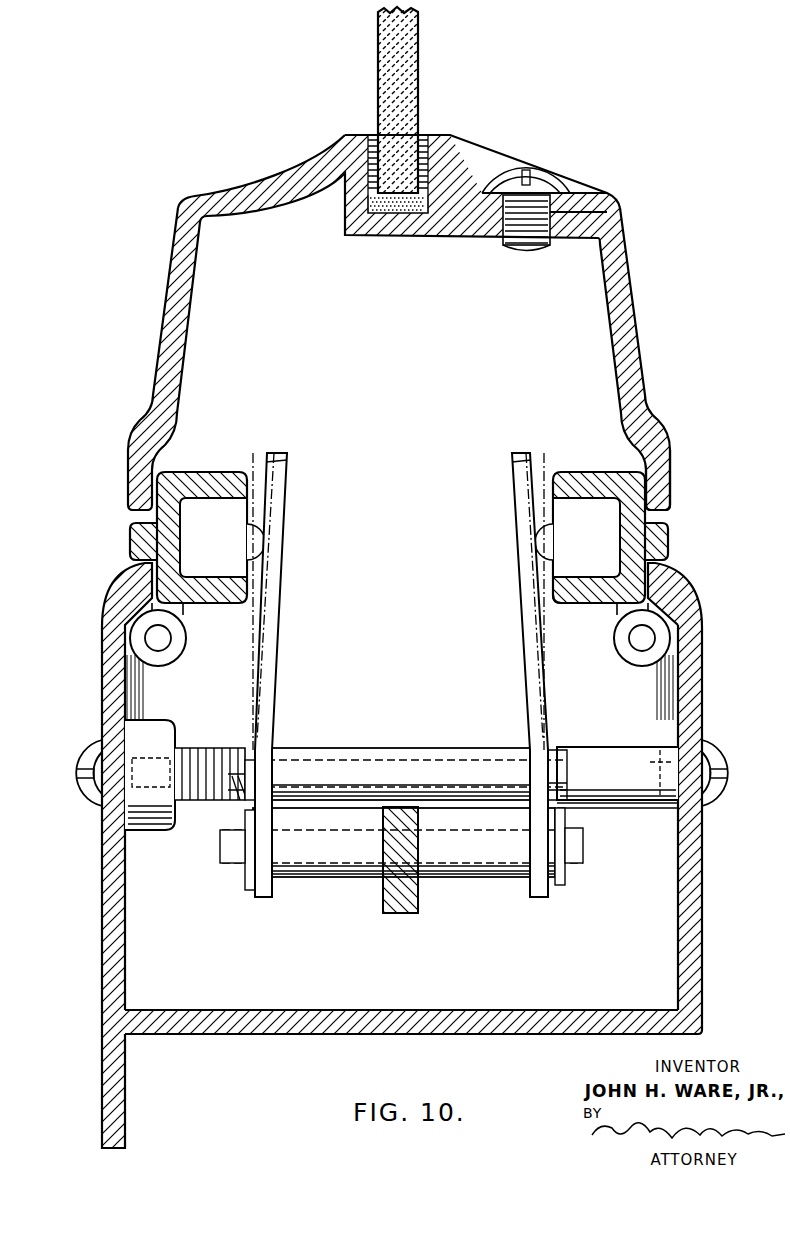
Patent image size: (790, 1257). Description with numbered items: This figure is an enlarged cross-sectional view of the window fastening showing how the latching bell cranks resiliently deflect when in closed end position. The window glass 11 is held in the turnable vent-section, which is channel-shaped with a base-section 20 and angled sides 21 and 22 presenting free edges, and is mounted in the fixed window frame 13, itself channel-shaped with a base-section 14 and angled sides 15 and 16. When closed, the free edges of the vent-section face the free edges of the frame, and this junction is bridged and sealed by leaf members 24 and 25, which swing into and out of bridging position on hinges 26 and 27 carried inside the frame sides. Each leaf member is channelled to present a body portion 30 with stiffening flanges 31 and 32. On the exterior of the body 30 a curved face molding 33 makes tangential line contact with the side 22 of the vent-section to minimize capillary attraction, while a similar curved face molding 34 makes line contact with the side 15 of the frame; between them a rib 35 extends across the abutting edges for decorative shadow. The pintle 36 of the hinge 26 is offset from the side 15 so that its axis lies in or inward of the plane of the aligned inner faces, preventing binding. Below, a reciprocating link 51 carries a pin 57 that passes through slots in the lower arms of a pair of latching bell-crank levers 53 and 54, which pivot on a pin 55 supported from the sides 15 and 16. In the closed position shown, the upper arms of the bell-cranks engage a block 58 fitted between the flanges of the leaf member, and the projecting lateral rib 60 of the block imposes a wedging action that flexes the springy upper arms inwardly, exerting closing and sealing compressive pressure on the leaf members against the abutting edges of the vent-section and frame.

The window glass 11 is at (414, 76).
The fixed window frame 13 is at (391, 958).
The base-section 14 is at (180, 1036).
The angled side 15 is at (703, 858).
The angled side 16 is at (103, 856).
The base-section 20 is at (283, 175).
The angled side 21 is at (162, 355).
The angled side 22 is at (637, 383).
The leaf member 24 is at (634, 537).
The leaf member 25 is at (150, 546).
The hinge 26 is at (624, 666).
The hinge 27 is at (166, 661).
The body portion 30 is at (586, 537).
The stiffening flange 31 is at (216, 471).
The stiffening flange 32 is at (591, 602).
The curved face molding 33 is at (650, 487).
The curved face molding 34 is at (667, 583).
The rib 35 is at (667, 541).
The pintle 36 is at (629, 646).
The link 51 is at (418, 904).
The latching bell-crank lever 53 is at (268, 703).
The latching bell-crank lever 54 is at (531, 704).
The pin 55 is at (379, 748).
The pin 57 is at (584, 858).
The block 58 is at (216, 521).
The lateral rib 60 is at (258, 546).